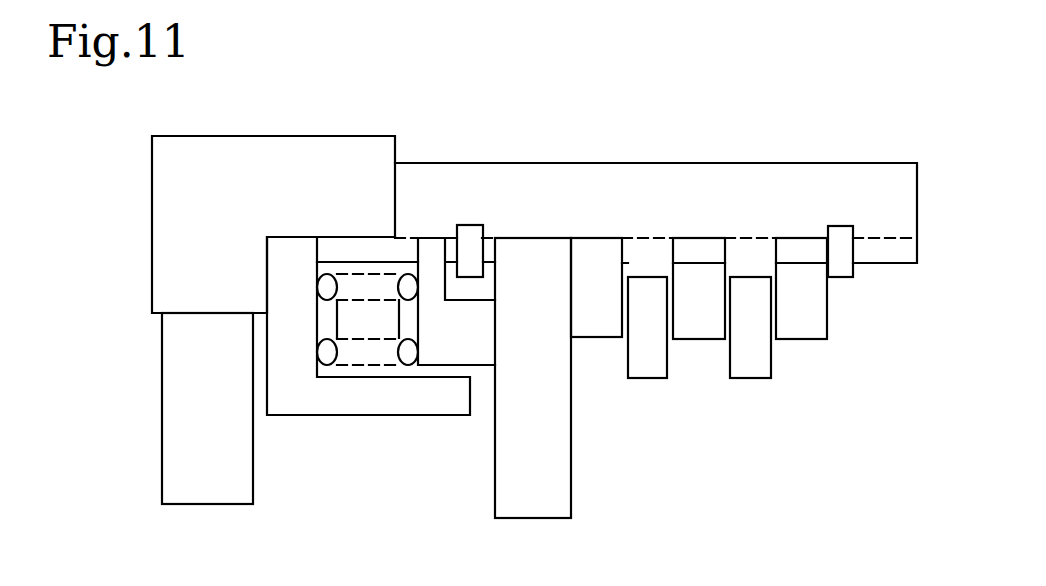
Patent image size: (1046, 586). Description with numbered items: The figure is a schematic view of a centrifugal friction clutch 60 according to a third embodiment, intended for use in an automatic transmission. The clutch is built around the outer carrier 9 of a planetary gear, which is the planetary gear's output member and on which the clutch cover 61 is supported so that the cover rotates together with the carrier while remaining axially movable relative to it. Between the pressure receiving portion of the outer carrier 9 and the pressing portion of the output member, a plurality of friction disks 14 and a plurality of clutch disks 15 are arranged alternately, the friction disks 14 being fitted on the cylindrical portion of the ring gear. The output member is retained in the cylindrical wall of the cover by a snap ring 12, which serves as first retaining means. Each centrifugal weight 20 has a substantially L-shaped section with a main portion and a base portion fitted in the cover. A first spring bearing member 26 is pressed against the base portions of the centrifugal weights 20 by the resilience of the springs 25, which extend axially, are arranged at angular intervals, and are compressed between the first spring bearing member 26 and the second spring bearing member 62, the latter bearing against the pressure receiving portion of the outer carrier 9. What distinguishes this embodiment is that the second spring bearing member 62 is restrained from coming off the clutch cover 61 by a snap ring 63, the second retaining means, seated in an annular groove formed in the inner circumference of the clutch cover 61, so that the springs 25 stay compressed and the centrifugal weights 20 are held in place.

The centrifugal weight 20 is at (241, 136).
The clutch cover 61 is at (637, 163).
The centrifugal friction clutch 60 is at (583, 141).
The outer carrier 9 is at (571, 480).
The clutch disks 15 is at (792, 252).
The friction disks 14 is at (651, 380).
The snap ring 12 is at (840, 280).
The snap ring 63 is at (469, 252).
The second spring bearing member 62 is at (475, 367).
The first spring bearing member 26 is at (303, 416).
The springs 25 is at (383, 366).